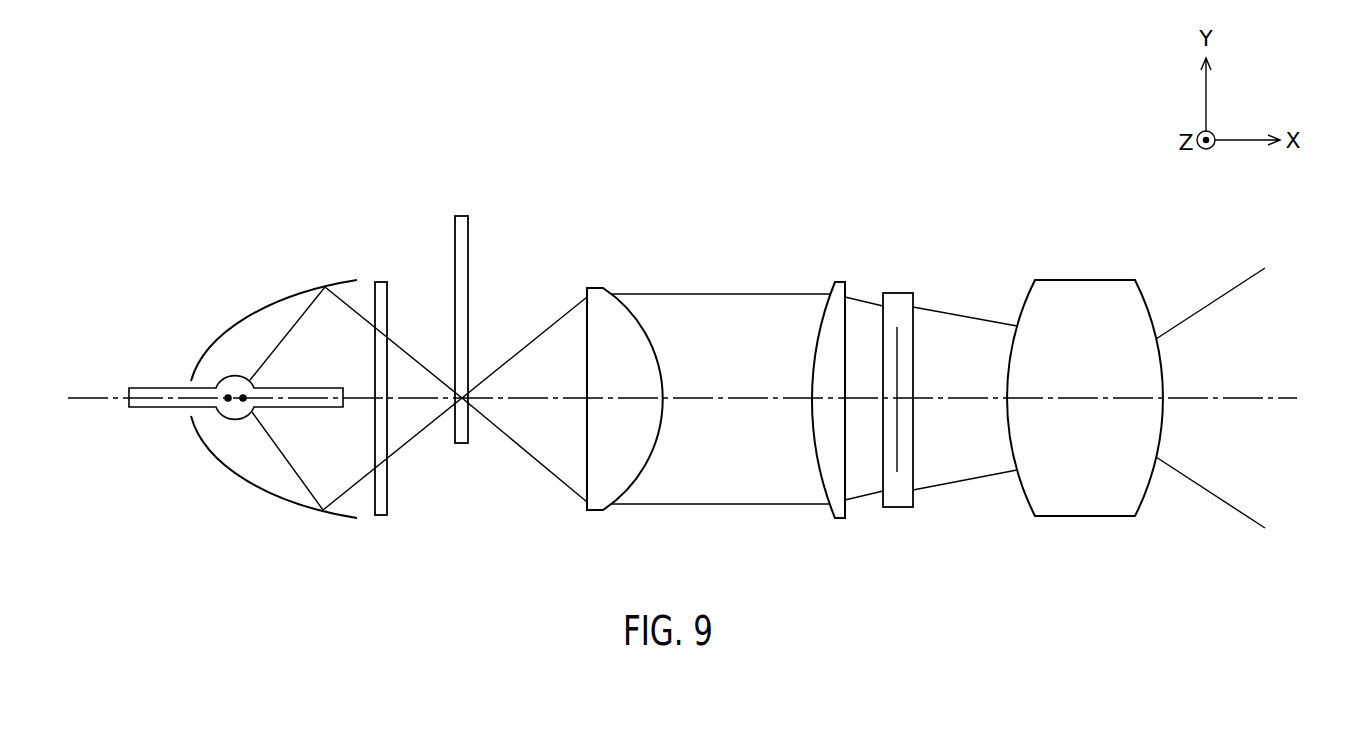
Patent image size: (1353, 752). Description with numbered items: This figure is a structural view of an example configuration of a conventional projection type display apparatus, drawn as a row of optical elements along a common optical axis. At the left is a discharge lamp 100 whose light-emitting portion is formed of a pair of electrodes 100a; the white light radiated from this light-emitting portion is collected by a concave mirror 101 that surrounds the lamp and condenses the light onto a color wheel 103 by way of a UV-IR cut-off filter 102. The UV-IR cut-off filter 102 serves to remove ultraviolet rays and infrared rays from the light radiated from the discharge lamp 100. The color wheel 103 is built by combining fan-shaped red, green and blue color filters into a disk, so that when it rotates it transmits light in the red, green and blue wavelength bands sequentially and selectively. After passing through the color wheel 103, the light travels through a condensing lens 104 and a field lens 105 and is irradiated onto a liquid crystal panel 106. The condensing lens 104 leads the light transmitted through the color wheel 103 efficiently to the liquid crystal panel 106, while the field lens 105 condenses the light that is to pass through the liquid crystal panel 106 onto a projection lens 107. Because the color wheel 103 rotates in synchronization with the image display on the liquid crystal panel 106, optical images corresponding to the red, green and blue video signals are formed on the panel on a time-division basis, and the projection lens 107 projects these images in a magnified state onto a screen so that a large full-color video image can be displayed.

The discharge lamp 100 is at (230, 397).
The pair of electrodes 100a is at (218, 413).
The concave mirror 101 is at (250, 316).
The UV-IR cut-off filter 102 is at (386, 280).
The color wheel 103 is at (466, 214).
The condensing lens 104 is at (598, 287).
The field lens 105 is at (841, 280).
The liquid crystal panel 106 is at (905, 292).
The projection lens 107 is at (1087, 279).